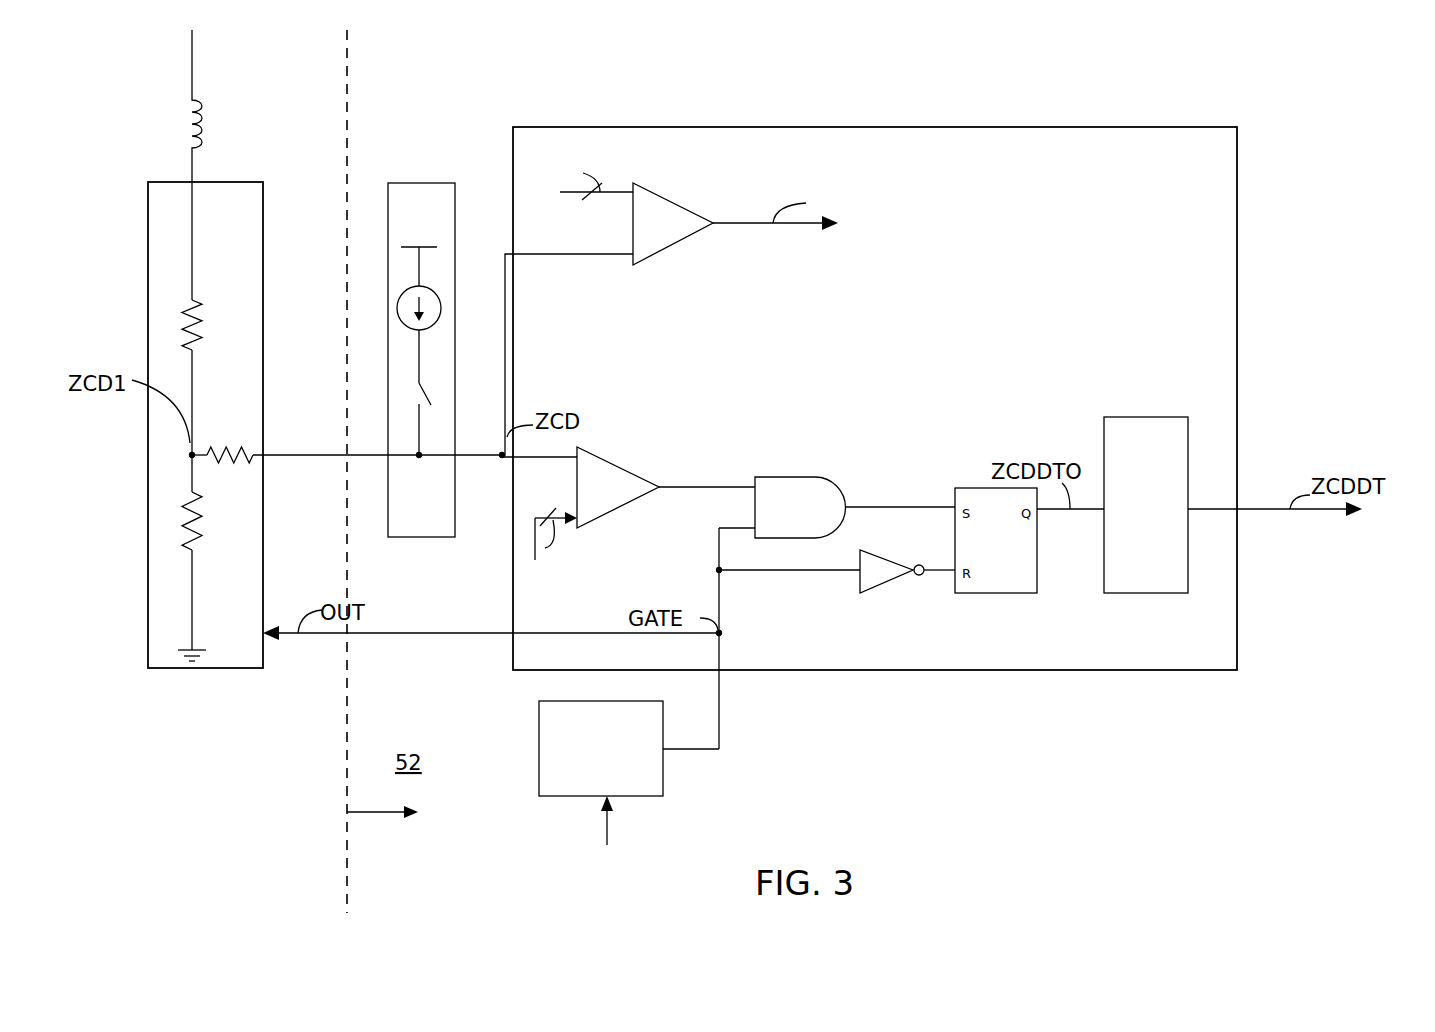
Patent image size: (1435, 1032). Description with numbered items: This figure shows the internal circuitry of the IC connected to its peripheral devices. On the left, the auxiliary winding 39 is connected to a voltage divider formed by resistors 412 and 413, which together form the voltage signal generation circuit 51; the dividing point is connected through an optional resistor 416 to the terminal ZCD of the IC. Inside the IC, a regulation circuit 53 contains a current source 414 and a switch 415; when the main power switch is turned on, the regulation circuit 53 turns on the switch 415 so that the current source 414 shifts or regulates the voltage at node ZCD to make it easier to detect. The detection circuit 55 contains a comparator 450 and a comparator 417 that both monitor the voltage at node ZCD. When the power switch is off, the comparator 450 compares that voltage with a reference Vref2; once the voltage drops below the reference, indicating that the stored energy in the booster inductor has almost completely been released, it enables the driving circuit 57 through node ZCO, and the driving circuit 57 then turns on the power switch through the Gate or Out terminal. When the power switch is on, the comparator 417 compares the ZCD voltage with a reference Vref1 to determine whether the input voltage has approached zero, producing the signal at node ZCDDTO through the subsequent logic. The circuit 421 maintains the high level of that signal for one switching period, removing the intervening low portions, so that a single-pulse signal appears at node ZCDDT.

The auxiliary winding 39 is at (215, 127).
The voltage signal generation circuit 51 is at (148, 220).
The regulation circuit 53 is at (405, 183).
The detection circuit 55 is at (868, 127).
The driving circuit 57 is at (663, 770).
The resistor 412 is at (182, 327).
The resistor 413 is at (182, 522).
The current source 414 is at (398, 293).
The switch 415 is at (433, 393).
The resistor 416 is at (231, 466).
The comparator 417 is at (613, 460).
The circuit 421 is at (1150, 593).
The comparator 450 is at (668, 193).